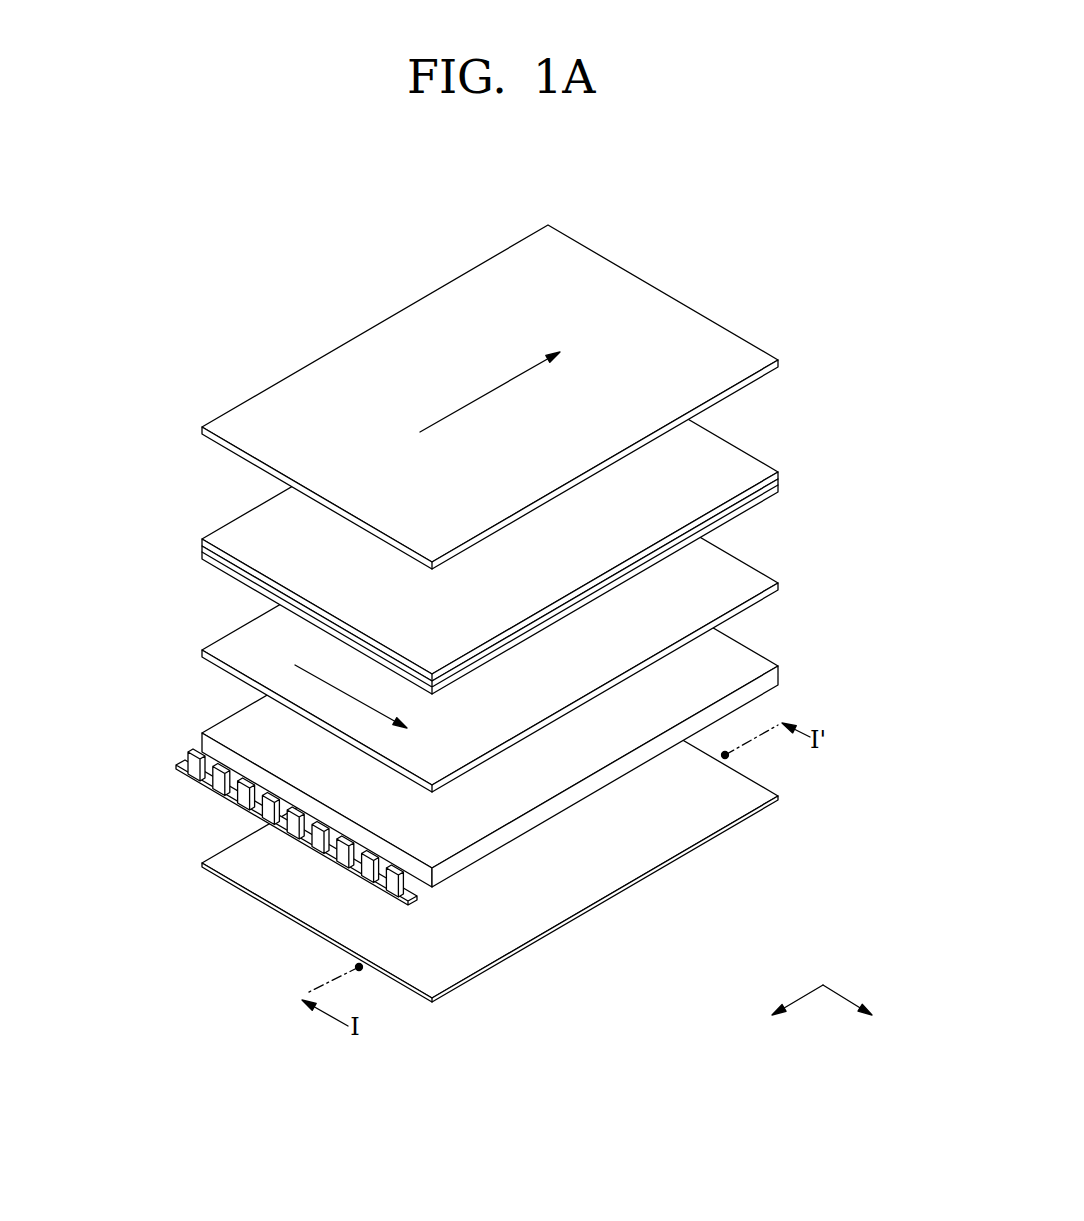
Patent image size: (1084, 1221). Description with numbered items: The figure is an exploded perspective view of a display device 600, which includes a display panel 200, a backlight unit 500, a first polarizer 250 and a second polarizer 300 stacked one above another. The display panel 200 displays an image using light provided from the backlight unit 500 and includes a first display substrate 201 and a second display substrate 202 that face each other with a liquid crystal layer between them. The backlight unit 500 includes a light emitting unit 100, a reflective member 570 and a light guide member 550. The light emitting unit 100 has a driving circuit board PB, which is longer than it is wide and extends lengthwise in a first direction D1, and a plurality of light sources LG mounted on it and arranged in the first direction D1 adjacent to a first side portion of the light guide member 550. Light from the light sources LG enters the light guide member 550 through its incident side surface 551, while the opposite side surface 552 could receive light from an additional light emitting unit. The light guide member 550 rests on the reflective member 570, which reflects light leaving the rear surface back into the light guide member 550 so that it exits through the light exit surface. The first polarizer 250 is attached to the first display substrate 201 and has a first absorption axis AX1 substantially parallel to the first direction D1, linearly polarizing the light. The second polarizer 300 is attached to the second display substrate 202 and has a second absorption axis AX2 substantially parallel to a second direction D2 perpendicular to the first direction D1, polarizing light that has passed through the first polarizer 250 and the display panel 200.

The display device 600 is at (487, 584).
The second polarizer 300 is at (762, 357).
The display panel 200 is at (561, 515).
The second display substrate 202 is at (780, 475).
The first display substrate 201 is at (782, 489).
The first polarizer 250 is at (760, 583).
The backlight unit 500 is at (487, 766).
The light guide member 550 is at (480, 709).
The side surface 552 is at (752, 648).
The incident side surface 551 is at (212, 746).
The reflective member 570 is at (760, 797).
The light emitting unit 100 is at (236, 827).
The light source LG is at (192, 762).
The driving circuit board PB is at (193, 783).
The first absorption axis AX1 is at (317, 675).
The second absorption axis AX2 is at (490, 390).
The first direction D1 is at (858, 1013).
The second direction D2 is at (785, 1013).